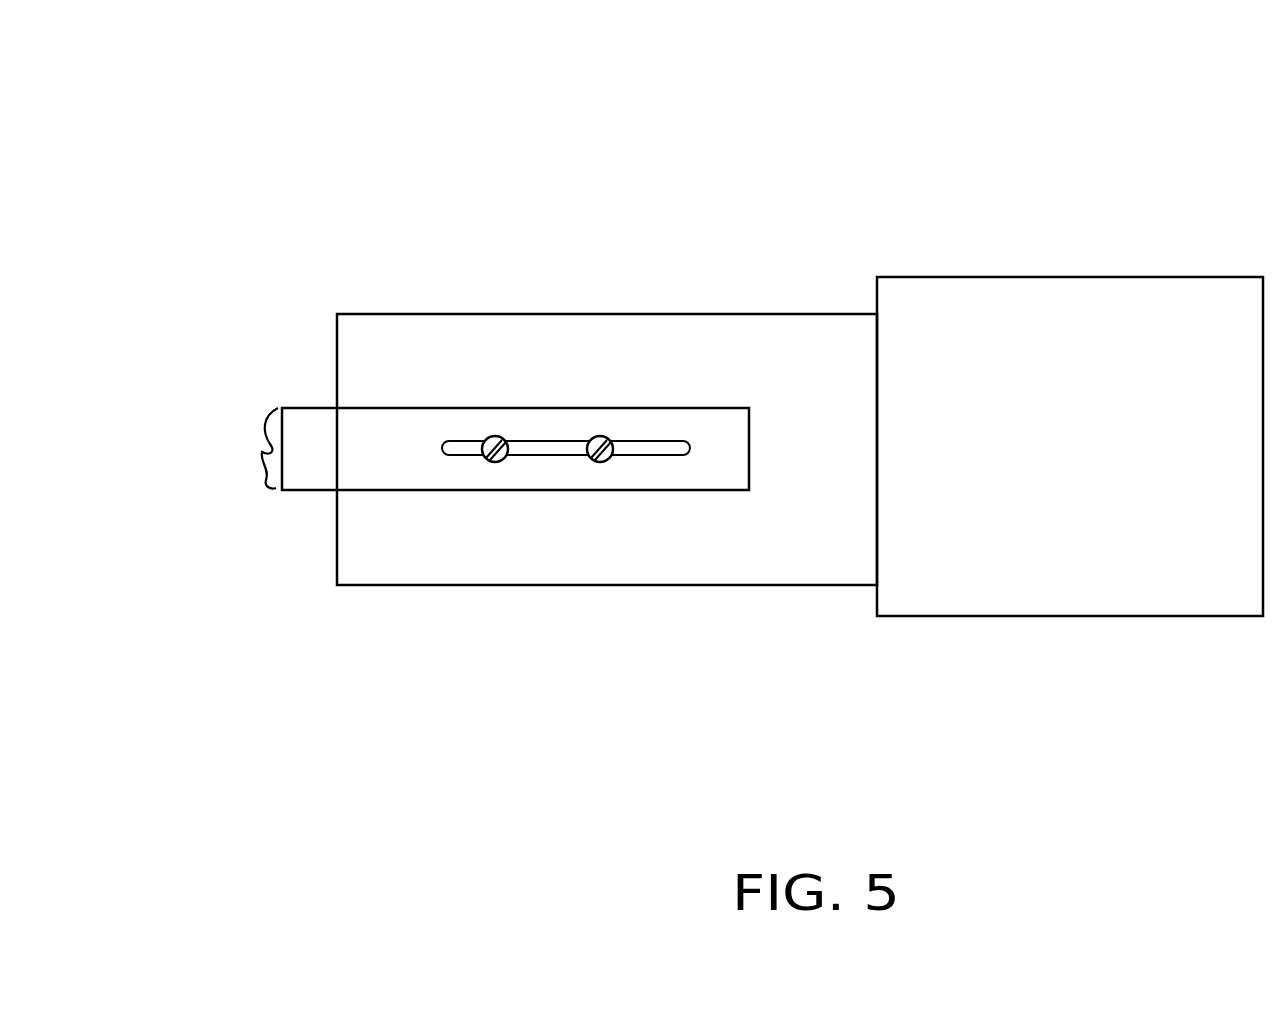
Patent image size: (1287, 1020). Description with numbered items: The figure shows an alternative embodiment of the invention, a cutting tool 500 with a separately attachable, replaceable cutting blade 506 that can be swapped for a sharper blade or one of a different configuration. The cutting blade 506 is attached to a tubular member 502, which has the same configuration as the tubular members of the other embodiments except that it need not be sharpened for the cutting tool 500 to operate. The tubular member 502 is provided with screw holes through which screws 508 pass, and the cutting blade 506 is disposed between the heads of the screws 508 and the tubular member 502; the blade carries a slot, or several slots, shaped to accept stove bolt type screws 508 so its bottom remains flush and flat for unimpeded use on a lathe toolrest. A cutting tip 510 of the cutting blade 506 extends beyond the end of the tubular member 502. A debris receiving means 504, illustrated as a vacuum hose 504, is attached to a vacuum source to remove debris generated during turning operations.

The cutting tool 500 is at (858, 128).
The tubular member 502 is at (478, 327).
The debris receiving means 504 is at (1060, 303).
The replaceable cutting blade 506 is at (327, 428).
The screws 508 is at (601, 437).
The cutting tip 510 is at (260, 455).